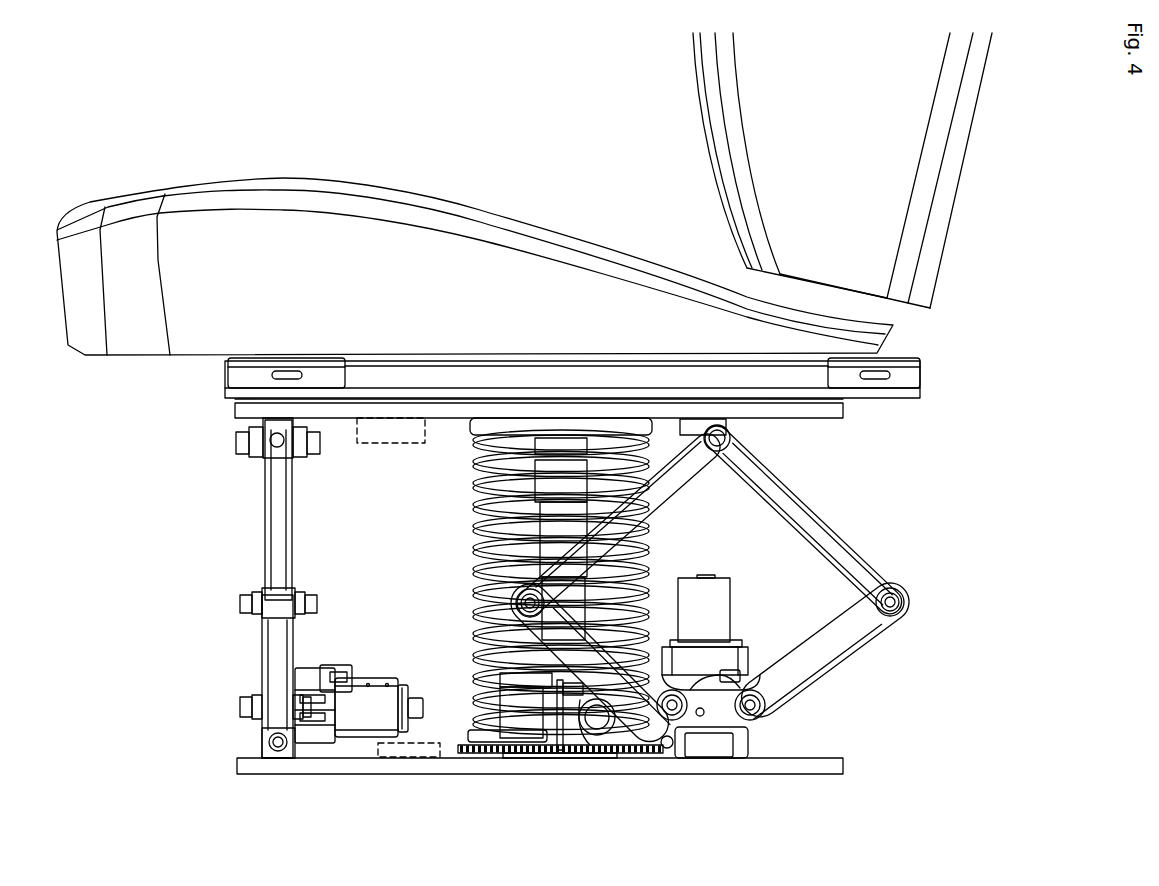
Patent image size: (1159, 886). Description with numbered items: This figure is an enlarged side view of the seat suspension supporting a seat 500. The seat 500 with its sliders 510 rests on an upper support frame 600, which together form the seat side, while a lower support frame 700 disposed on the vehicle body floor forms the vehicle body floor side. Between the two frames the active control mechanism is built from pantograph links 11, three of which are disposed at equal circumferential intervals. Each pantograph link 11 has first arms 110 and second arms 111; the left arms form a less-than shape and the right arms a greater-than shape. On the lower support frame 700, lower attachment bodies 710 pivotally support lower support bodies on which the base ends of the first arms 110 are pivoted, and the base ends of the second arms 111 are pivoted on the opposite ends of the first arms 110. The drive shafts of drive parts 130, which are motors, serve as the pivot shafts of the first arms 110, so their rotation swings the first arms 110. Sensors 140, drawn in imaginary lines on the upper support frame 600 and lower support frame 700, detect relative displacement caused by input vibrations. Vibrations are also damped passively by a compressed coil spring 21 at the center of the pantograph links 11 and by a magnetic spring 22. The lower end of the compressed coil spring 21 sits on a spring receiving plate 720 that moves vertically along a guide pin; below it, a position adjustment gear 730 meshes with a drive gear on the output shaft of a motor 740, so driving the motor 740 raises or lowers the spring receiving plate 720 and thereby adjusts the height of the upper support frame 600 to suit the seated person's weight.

The seat 500 is at (398, 193).
The sliders 510 is at (922, 368).
The upper support frame 600 is at (233, 411).
The sensors 140 is at (400, 440).
The lower support frame 700 is at (652, 769).
The second arms 111 is at (270, 525).
The first arms 110 is at (270, 665).
The pantograph links 11 is at (863, 550).
The compressed coil spring 21 is at (477, 490).
The magnetic spring 22 is at (477, 523).
The spring receiving plate 720 is at (472, 726).
The position adjustment gear 730 is at (487, 754).
The drive parts 130 is at (370, 682).
The motor 740 is at (722, 580).
The lower attachment bodies 710 is at (708, 752).